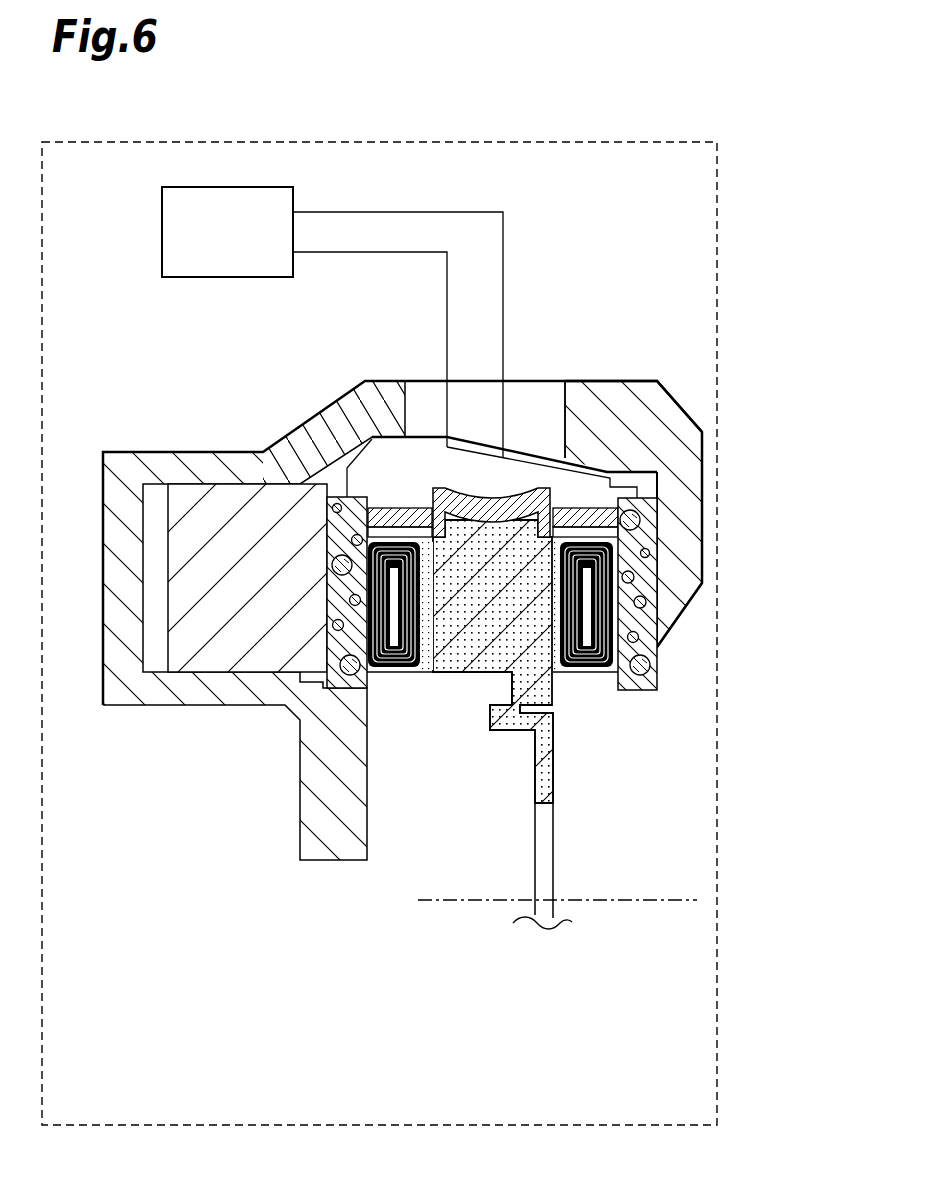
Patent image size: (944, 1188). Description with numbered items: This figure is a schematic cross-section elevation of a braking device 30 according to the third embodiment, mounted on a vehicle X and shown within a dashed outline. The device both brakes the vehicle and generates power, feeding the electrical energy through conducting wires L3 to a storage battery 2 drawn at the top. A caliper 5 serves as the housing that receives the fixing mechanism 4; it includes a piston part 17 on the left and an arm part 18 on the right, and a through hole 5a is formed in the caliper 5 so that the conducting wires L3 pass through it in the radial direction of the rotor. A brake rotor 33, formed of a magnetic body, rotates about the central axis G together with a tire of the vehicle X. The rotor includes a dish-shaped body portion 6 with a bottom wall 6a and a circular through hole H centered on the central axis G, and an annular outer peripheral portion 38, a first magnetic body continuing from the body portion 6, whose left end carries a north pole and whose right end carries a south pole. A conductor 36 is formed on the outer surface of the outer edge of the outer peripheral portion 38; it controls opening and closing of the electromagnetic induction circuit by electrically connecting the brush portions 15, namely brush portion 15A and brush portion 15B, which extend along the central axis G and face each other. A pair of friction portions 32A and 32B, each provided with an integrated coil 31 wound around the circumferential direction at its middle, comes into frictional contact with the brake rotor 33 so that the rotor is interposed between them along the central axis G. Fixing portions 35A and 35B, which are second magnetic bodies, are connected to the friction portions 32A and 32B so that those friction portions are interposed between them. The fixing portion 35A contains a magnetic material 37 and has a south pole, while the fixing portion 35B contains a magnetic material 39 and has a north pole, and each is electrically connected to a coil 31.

The braking device 30 is at (724, 120).
The storage battery 2 is at (212, 187).
The conducting wires L3 is at (503, 268).
The fixing mechanism 4 is at (398, 488).
The piston part 17 is at (190, 520).
The caliper 5 is at (622, 378).
The through hole 5a is at (562, 404).
The arm part 18 is at (690, 487).
The brush portions 15 is at (522, 442).
The brush portion 15A is at (383, 503).
The brush portion 15B is at (594, 502).
The conductor 36 is at (478, 492).
The coil 31 is at (408, 670).
The friction portion 32A is at (376, 677).
The friction portion 32B is at (597, 680).
The fixing portion 35A is at (294, 592).
The fixing portion 35B is at (706, 594).
The magnetic material 37 is at (338, 562).
The magnetic material 39 is at (643, 603).
The brake rotor 33 is at (581, 800).
The outer peripheral portion 38 is at (560, 684).
The body portion 6 is at (558, 821).
The bottom wall 6a is at (535, 763).
The through hole H is at (536, 805).
The central axis G is at (650, 900).
The vehicle X is at (723, 1034).